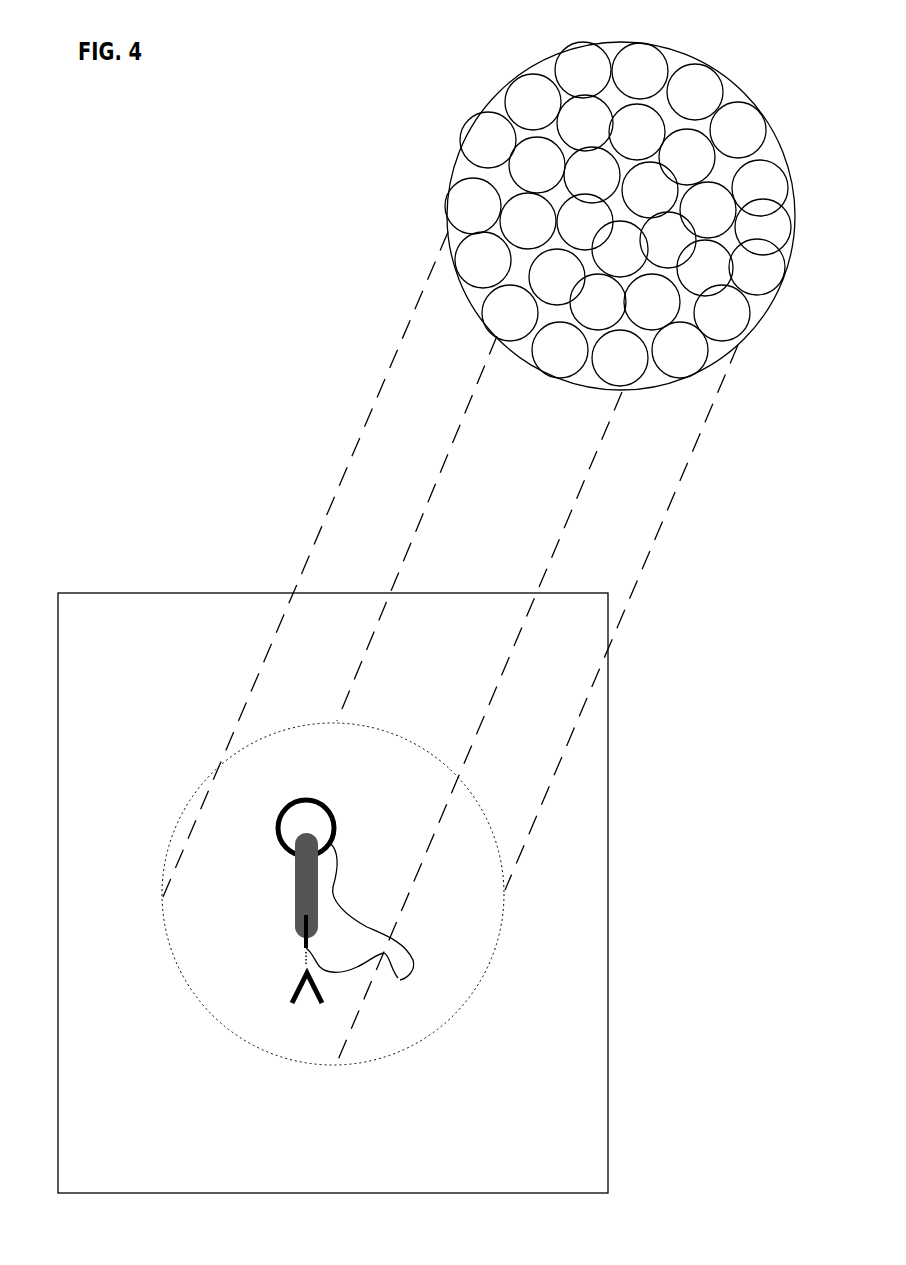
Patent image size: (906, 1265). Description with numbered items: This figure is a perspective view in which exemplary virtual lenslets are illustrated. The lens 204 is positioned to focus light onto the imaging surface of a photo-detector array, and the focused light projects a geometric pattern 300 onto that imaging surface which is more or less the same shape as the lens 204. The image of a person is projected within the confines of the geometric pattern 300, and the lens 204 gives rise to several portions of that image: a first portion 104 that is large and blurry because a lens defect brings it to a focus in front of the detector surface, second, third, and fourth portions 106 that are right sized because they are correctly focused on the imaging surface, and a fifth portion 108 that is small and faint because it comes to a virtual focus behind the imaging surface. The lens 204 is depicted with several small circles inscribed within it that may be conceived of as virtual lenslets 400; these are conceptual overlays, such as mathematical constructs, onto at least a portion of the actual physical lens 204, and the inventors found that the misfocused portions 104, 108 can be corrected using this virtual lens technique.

The lens 204 is at (342, 118).
The virtual lenslets 400 is at (585, 231).
The geometric pattern 300 is at (182, 986).
The first portion 104 is at (297, 880).
The second, third, and fourth portions 106 is at (318, 995).
The fifth portion 108 is at (307, 955).